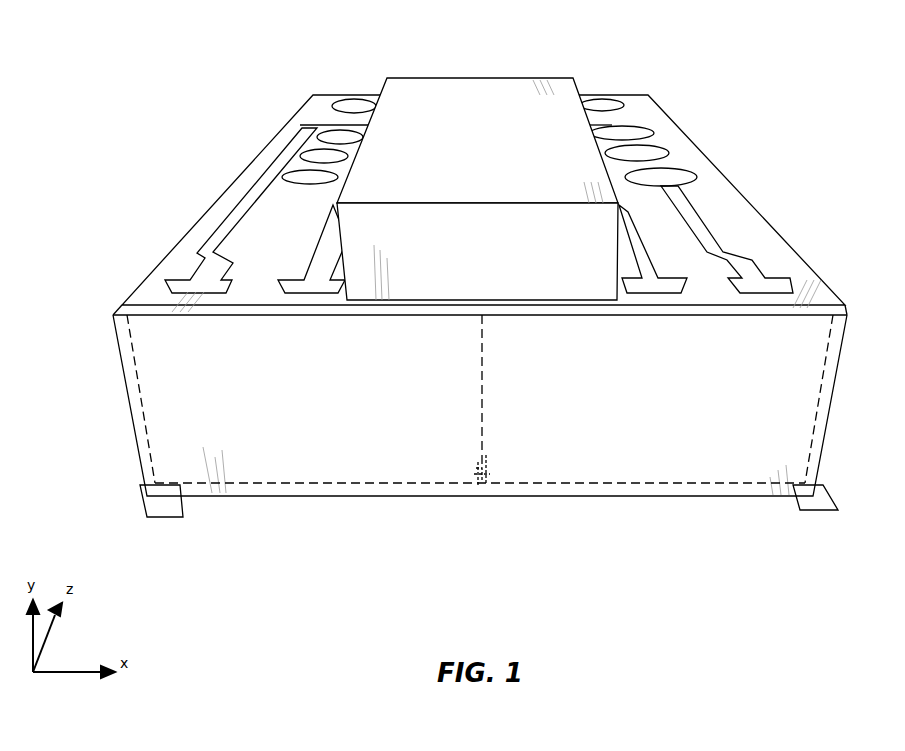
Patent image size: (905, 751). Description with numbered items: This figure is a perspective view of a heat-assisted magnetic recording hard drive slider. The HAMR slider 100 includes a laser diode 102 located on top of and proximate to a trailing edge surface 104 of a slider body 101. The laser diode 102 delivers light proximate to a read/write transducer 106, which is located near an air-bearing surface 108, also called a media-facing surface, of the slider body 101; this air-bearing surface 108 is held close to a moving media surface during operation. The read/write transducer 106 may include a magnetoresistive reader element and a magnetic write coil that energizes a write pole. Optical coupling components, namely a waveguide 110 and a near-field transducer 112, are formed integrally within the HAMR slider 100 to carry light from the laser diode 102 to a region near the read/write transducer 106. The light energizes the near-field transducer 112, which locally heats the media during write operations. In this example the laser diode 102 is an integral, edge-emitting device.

The HAMR slider 100 is at (466, 306).
The slider body 101 is at (310, 115).
The laser diode 102 is at (403, 77).
The trailing edge surface 104 is at (166, 520).
The read/write transducer 106 is at (487, 490).
The air-bearing surface 108 is at (831, 512).
The waveguide 110 is at (483, 380).
The near-field transducer 112 is at (477, 498).